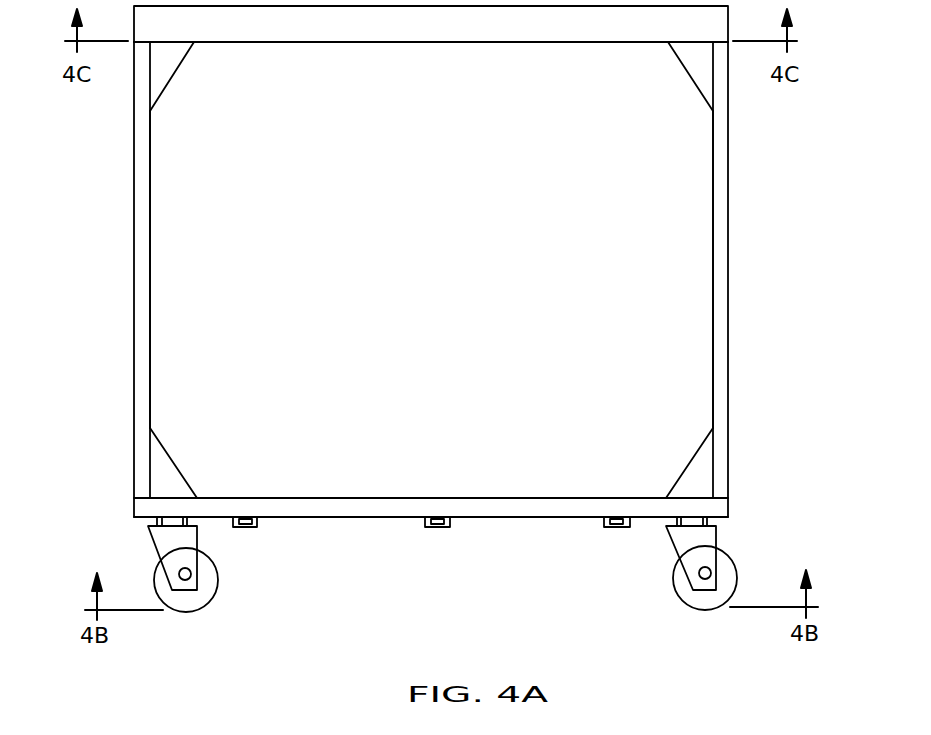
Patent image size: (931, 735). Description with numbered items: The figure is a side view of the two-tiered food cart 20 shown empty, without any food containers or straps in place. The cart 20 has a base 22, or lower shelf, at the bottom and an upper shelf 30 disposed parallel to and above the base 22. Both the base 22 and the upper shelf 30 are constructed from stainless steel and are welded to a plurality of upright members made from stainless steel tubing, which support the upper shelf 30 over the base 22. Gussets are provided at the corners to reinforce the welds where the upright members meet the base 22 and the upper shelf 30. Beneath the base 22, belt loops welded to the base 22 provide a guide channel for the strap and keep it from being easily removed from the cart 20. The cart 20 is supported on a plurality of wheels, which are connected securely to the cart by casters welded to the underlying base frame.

The food cart 20 is at (765, 226).
The base 22 is at (386, 510).
The upper shelf 30 is at (457, 27).